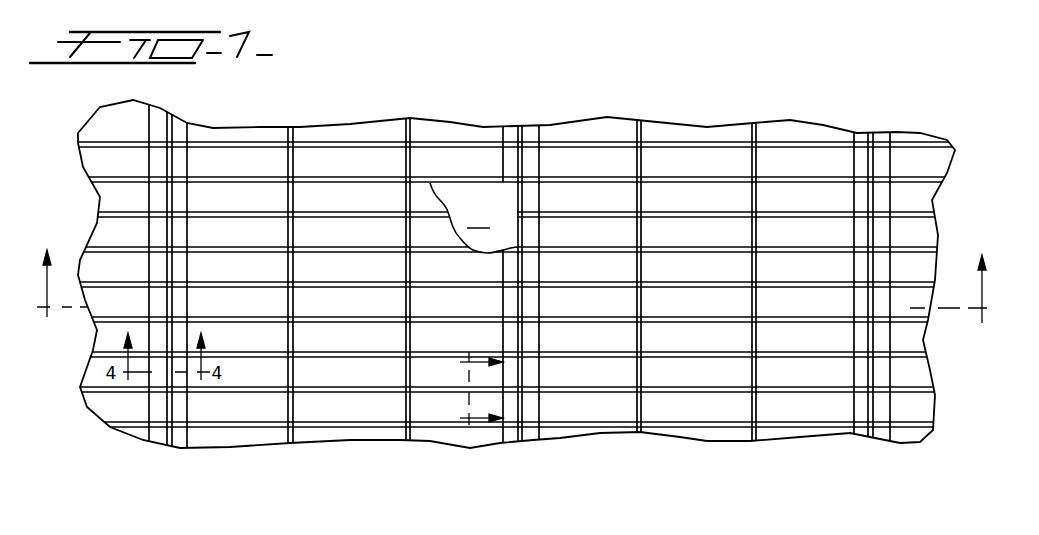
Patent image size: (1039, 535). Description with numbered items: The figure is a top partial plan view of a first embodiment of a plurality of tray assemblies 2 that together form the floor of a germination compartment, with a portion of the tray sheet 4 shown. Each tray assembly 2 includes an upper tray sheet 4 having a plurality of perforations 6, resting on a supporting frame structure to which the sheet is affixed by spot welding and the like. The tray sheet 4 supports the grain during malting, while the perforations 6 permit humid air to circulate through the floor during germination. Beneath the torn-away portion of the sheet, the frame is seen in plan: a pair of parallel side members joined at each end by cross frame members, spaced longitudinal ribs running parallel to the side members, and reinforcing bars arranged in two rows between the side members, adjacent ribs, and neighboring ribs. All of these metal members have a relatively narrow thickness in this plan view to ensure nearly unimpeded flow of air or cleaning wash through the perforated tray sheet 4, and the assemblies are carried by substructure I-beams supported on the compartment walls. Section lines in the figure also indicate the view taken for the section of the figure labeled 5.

The tray assemblies 2 is at (185, 240).
The upper tray sheet 4 is at (473, 218).
The section line 5 is at (474, 391).
The perforations 6 is at (488, 195).